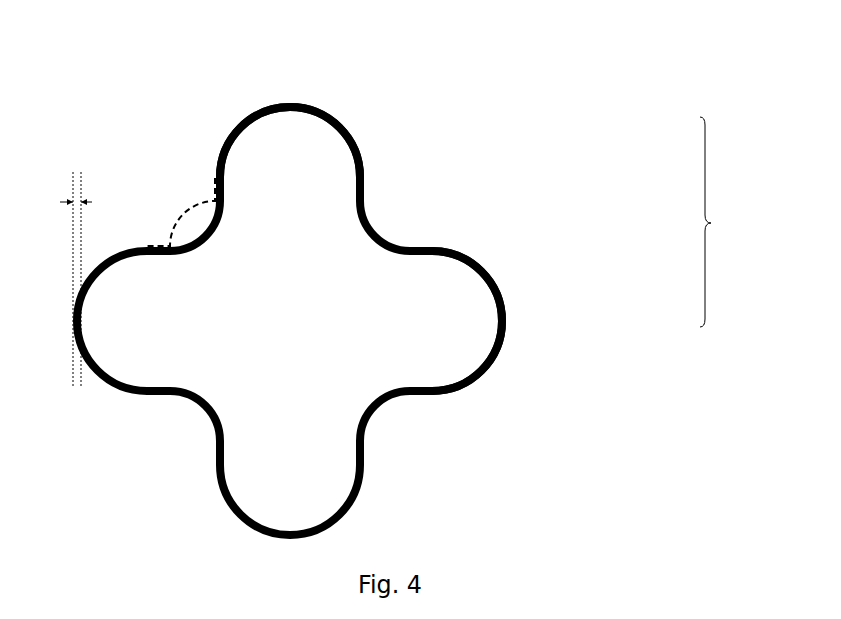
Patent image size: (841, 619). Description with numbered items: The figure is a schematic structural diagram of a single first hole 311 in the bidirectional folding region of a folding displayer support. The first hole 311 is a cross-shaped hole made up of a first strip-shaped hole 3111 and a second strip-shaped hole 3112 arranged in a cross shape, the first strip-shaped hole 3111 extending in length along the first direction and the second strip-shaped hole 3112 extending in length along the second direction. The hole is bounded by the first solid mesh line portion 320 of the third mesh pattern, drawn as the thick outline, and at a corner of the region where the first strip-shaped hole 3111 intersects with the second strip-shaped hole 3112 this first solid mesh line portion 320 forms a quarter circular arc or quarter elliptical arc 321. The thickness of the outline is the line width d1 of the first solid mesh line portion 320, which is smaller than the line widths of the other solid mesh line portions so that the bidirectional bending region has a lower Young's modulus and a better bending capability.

The first solid mesh line portion 320 is at (271, 101).
The quarter circular arc or quarter elliptical arc 321 is at (197, 218).
The first hole 311 is at (740, 222).
The first strip-shaped hole 3111 is at (465, 305).
The second strip-shaped hole 3112 is at (310, 163).
The line width of the first solid mesh line portion d1 is at (56, 280).